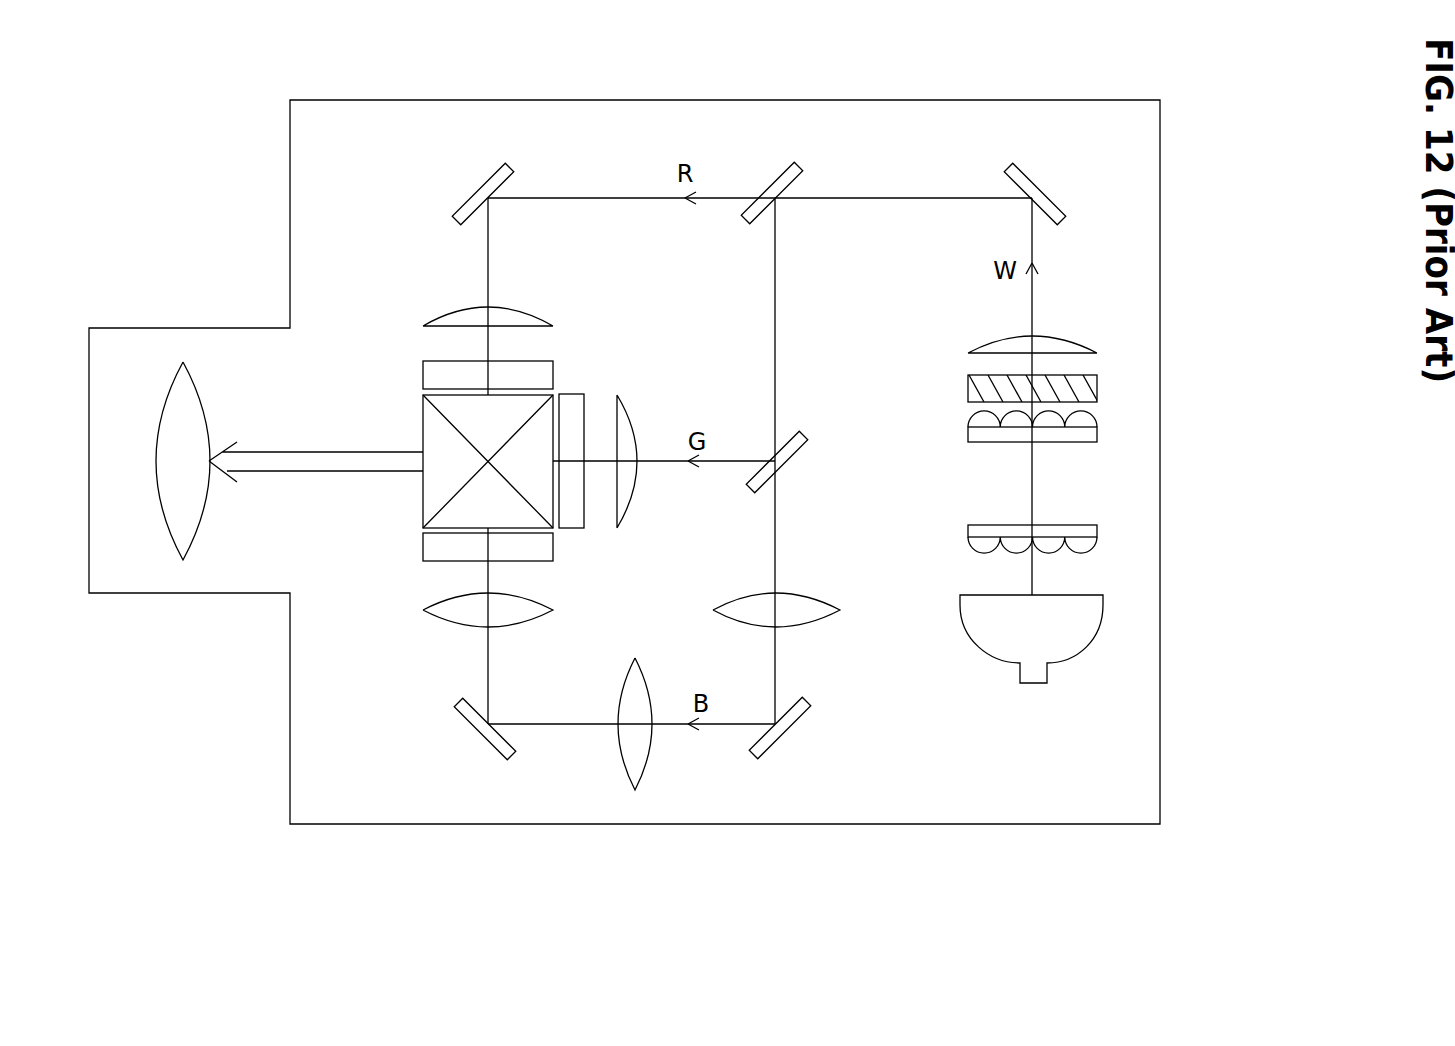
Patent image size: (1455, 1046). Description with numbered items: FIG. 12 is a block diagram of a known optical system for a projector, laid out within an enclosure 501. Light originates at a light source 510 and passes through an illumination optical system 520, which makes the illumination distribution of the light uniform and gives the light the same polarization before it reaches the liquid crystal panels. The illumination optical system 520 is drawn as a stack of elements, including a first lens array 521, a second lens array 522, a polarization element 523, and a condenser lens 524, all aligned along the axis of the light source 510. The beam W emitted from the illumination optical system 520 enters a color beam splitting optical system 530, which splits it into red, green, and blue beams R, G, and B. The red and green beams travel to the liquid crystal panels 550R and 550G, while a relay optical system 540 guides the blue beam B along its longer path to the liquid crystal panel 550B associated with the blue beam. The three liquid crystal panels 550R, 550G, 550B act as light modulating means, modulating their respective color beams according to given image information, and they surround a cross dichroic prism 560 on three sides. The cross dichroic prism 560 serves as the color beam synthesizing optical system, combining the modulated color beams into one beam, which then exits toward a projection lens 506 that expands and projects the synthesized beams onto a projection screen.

The housing 501 is at (1010, 100).
The projection lens 506 is at (170, 382).
The light source 510 is at (1104, 639).
The illumination optical system 520 is at (1150, 509).
The first lens array 521 is at (1097, 530).
The second lens array 522 is at (1097, 432).
The polarization conversion element 523 is at (1097, 385).
The condenser lens 524 is at (1097, 352).
The color beam splitting optical system 530 is at (611, 124).
The relay optical system 540 is at (572, 816).
The liquid crystal panel 550R is at (553, 375).
The liquid crystal panel 550G is at (573, 528).
The liquid crystal panel 550B is at (423, 546).
The cross dichroic prism 560 is at (423, 421).